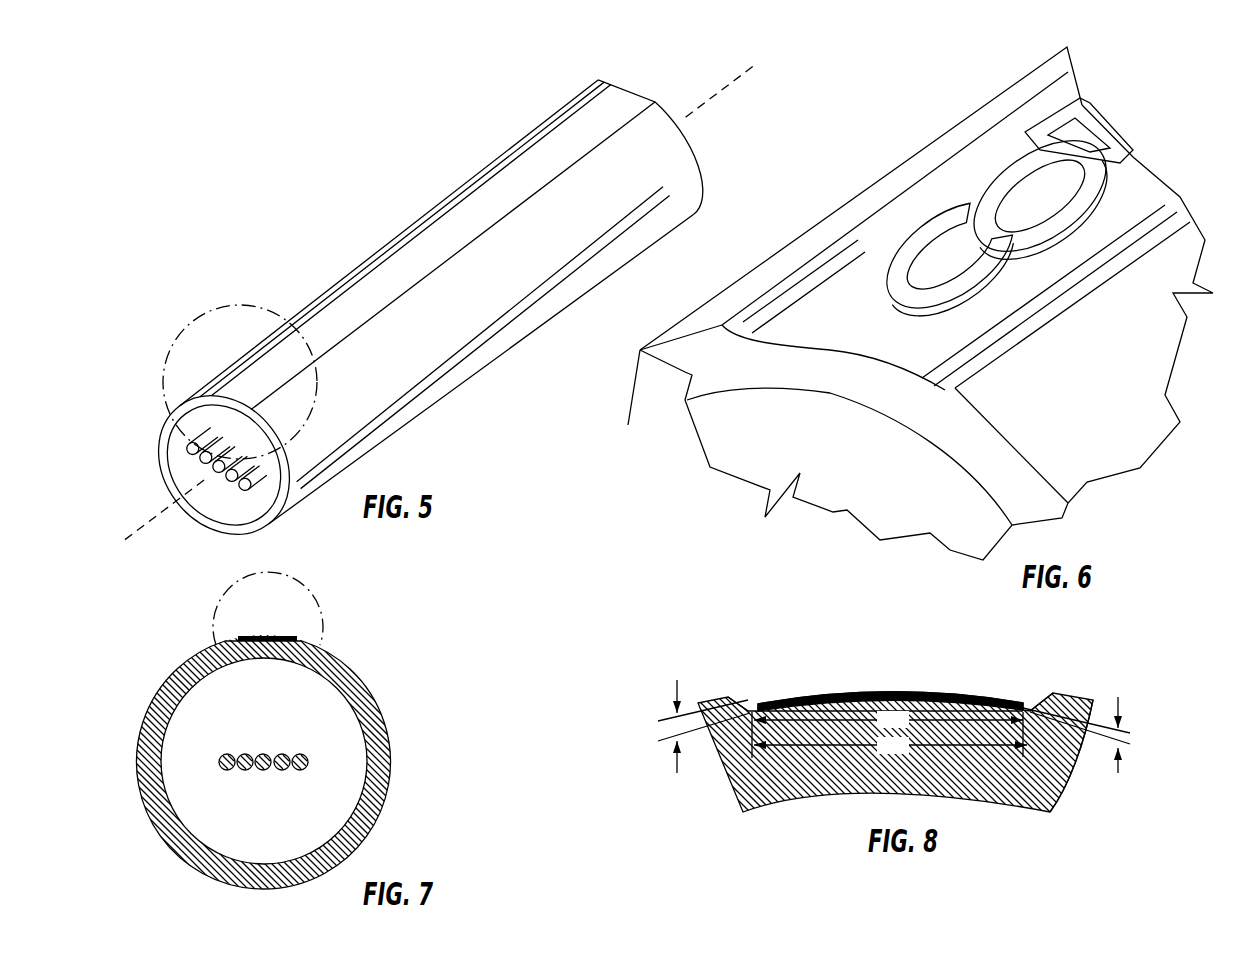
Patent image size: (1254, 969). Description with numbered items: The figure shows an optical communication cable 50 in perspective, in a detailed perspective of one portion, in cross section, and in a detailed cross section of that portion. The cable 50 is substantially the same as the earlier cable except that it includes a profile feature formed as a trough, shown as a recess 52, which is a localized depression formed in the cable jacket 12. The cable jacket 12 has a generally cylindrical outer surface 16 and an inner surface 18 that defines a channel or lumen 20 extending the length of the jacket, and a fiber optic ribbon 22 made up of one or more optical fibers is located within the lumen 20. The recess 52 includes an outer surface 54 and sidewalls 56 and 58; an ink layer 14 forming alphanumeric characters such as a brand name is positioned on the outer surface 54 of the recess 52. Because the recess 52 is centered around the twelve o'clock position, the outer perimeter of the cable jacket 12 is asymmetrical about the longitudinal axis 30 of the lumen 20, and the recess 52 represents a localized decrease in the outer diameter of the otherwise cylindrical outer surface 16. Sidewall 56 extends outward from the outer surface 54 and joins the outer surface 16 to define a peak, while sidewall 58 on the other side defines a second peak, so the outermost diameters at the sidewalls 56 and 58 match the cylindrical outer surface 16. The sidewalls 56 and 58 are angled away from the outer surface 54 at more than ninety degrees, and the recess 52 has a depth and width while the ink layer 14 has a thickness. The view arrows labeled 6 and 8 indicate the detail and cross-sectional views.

In FIG. 5, the optical communication cable 50 is at (402, 186).
In FIG. 6, the outer surface 16 is at (716, 308).
In FIG. 7, the outer surface 16 is at (389, 810).
In FIG. 8, the outer surface 16 is at (1084, 697).
In FIG. 5, the ink layer 14 is at (307, 292).
In FIG. 6, the ink layer 14 is at (885, 190).
In FIG. 7, the ink layer 14 is at (289, 614).
In FIG. 8, the ink layer 14 is at (894, 672).
In FIG. 5, the recess 52 is at (593, 112).
In FIG. 6, the recess 52 is at (848, 287).
In FIG. 8, the recess 52 is at (1004, 688).
In FIG. 5, the longitudinal axis 30 is at (688, 118).
In FIG. 5, the cable jacket 12 is at (165, 417).
In FIG. 5, the lumen 20 is at (228, 492).
In FIG. 7, the lumen 20 is at (245, 818).
In FIG. 5, the fiber optic ribbon 22 is at (188, 452).
In FIG. 7, the fiber optic ribbon 22 is at (307, 760).
In FIG. 7, the inner surface 18 is at (175, 734).
In FIG. 6, the outer surface of recess 54 is at (837, 338).
In FIG. 8, the outer surface of recess 54 is at (1049, 812).
In FIG. 6, the sidewall 56 is at (724, 334).
In FIG. 8, the sidewall 56 is at (748, 707).
In FIG. 6, the sidewall 58 is at (940, 393).
In FIG. 8, the sidewall 58 is at (1041, 690).
In FIG. 5, the view direction indicator for FIG. 6 is at (183, 427).
In FIG. 7, the view direction indicator for FIG. 8 is at (223, 660).